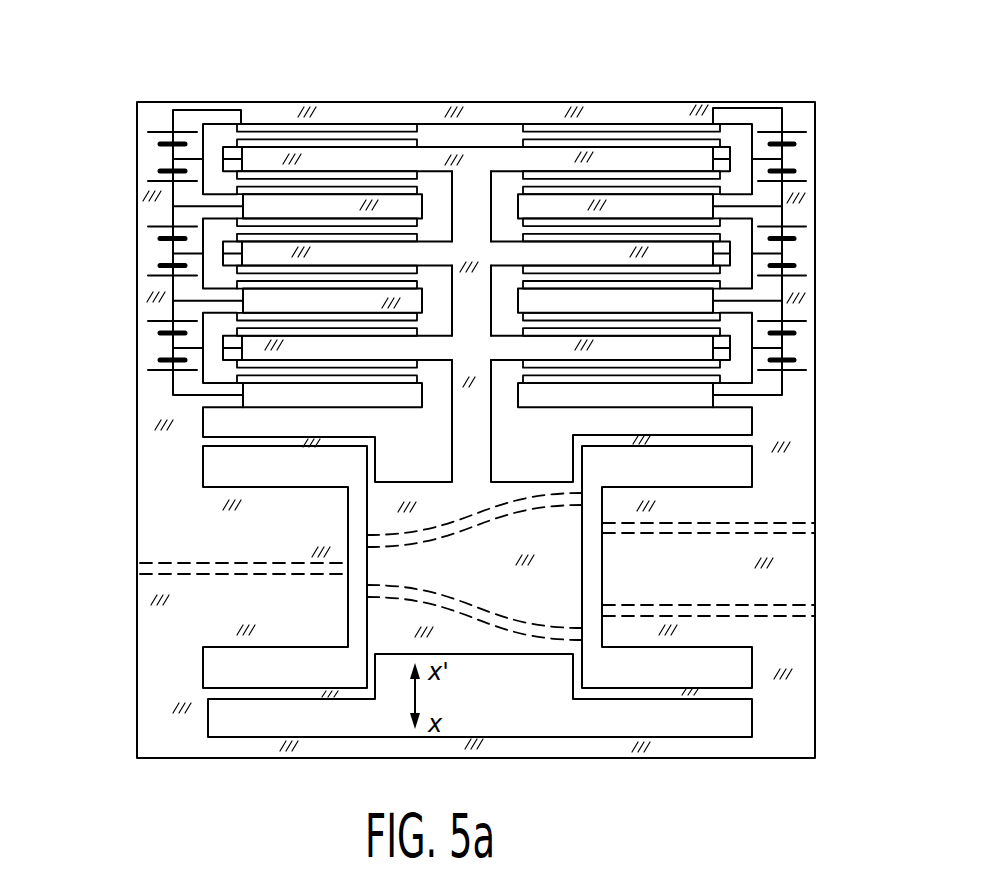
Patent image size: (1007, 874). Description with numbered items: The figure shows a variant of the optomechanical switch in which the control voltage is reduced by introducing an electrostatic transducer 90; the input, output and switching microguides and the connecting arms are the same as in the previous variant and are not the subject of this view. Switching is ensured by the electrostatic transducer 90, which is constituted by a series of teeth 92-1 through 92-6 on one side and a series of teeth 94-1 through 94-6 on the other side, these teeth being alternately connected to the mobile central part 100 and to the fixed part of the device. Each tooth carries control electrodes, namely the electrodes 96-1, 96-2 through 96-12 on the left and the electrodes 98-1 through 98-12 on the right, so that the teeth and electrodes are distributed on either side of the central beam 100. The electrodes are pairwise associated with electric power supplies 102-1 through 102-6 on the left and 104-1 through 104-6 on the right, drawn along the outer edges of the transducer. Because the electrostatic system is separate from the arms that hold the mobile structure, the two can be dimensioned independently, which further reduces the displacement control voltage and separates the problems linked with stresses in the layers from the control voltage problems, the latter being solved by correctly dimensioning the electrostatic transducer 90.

The electrostatic transducer 90 is at (792, 420).
The tooth 92-1 is at (355, 156).
The tooth 92-6 is at (396, 398).
The tooth 94-1 is at (566, 153).
The tooth 94-6 is at (563, 398).
The control electrode 96-1 is at (283, 126).
The control electrode 96-2 is at (395, 146).
The control electrode 96-12 is at (260, 381).
The control electrode 98-1 is at (679, 124).
The control electrode 98-12 is at (657, 382).
The mobile central part 100 is at (468, 178).
The electric power supply 102-1 is at (150, 134).
The electric power supply 102-6 is at (150, 367).
The electric power supply 104-1 is at (802, 136).
The electric power supply 104-6 is at (808, 358).